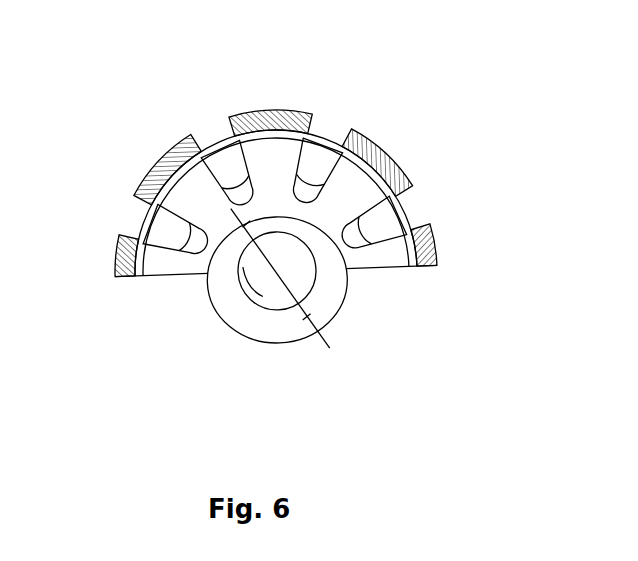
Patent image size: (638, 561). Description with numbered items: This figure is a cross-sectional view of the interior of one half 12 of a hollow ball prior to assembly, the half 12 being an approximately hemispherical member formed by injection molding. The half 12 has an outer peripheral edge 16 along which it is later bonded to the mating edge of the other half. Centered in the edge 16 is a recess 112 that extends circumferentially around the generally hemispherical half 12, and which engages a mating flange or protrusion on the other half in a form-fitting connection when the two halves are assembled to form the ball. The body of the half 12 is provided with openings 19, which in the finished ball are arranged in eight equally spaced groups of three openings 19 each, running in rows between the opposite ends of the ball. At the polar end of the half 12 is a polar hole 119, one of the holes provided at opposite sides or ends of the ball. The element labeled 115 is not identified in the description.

The half of the ball 12 is at (298, 252).
The openings 19 is at (172, 240).
The outer peripheral edge 16 is at (173, 278).
The hub 115 is at (345, 303).
The recess 112 is at (426, 268).
The polar holes 119 is at (265, 293).